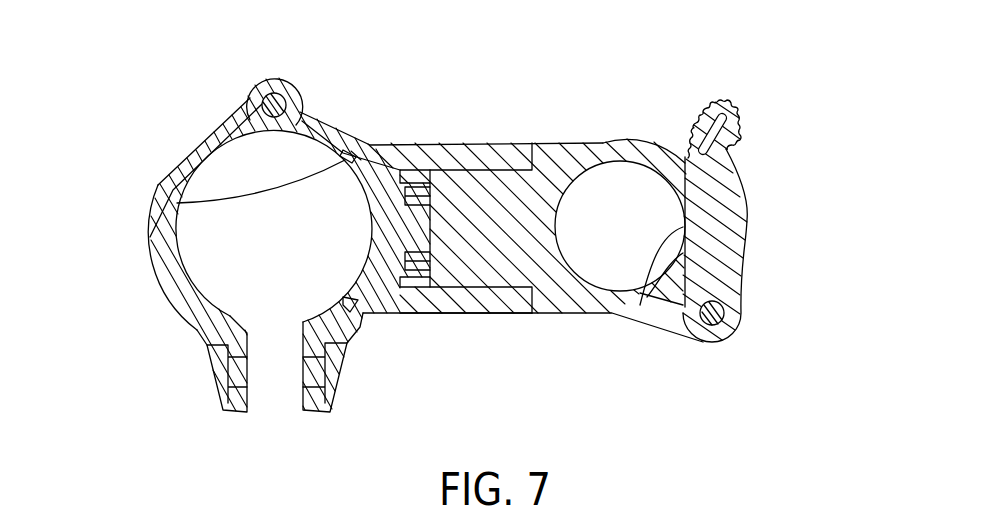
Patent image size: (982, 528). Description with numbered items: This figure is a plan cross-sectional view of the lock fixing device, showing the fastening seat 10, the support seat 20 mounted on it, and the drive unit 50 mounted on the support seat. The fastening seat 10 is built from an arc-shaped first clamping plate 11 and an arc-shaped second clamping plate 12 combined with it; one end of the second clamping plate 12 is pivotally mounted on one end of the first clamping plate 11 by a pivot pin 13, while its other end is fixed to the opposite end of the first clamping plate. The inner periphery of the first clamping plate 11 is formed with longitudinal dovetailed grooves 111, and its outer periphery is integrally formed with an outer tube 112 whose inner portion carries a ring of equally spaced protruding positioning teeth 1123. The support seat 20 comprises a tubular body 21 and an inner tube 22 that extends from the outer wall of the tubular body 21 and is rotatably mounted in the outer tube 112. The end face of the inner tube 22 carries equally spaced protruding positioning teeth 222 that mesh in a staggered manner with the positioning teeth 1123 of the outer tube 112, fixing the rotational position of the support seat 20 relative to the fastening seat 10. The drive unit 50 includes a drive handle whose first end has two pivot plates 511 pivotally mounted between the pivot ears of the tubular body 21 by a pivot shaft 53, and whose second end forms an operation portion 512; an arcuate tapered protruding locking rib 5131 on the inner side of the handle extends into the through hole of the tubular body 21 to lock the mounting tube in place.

The fastening seat 10 is at (166, 140).
The first clamping plate 11 is at (389, 150).
The second clamping plate 12 is at (213, 137).
The pivot pin 13 is at (279, 92).
The dovetailed groove 111 is at (152, 205).
The outer tube 112 is at (498, 306).
The positioning teeth 1123 is at (425, 182).
The support seat 20 is at (568, 128).
The tubular body 21 is at (644, 145).
The inner tube 22 is at (453, 288).
The positioning teeth 222 is at (410, 282).
The drive unit 50 is at (738, 250).
The pivot plates 511 is at (730, 313).
The operation portion 512 is at (738, 113).
The locking rib 5131 is at (650, 310).
The pivot shaft 53 is at (705, 326).